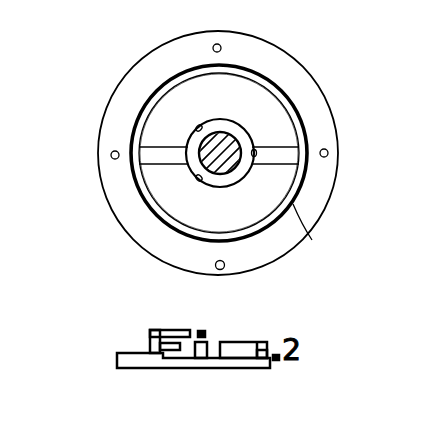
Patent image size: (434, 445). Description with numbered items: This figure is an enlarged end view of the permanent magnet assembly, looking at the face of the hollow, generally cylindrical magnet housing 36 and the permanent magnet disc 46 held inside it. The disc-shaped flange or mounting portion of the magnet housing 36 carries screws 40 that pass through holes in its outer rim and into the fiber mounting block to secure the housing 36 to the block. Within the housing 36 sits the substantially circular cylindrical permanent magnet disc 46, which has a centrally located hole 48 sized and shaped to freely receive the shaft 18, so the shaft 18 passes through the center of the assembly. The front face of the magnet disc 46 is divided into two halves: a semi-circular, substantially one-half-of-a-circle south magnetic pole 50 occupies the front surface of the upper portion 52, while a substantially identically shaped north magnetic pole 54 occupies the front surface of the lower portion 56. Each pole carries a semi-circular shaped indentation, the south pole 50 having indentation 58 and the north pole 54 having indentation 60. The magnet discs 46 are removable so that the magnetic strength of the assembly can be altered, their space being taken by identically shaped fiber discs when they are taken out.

The shaft 18 is at (274, 112).
The magnet housing 36 is at (272, 86).
The screws 40 is at (112, 158).
The permanent magnet disc 46 is at (276, 95).
The hole 48 is at (257, 153).
The south magnetic pole 50 is at (233, 82).
The upper portion 52 is at (140, 121).
The north magnetic pole 54 is at (254, 212).
The lower portion 56 is at (312, 240).
The indentation 58 is at (198, 126).
The indentation 60 is at (198, 180).